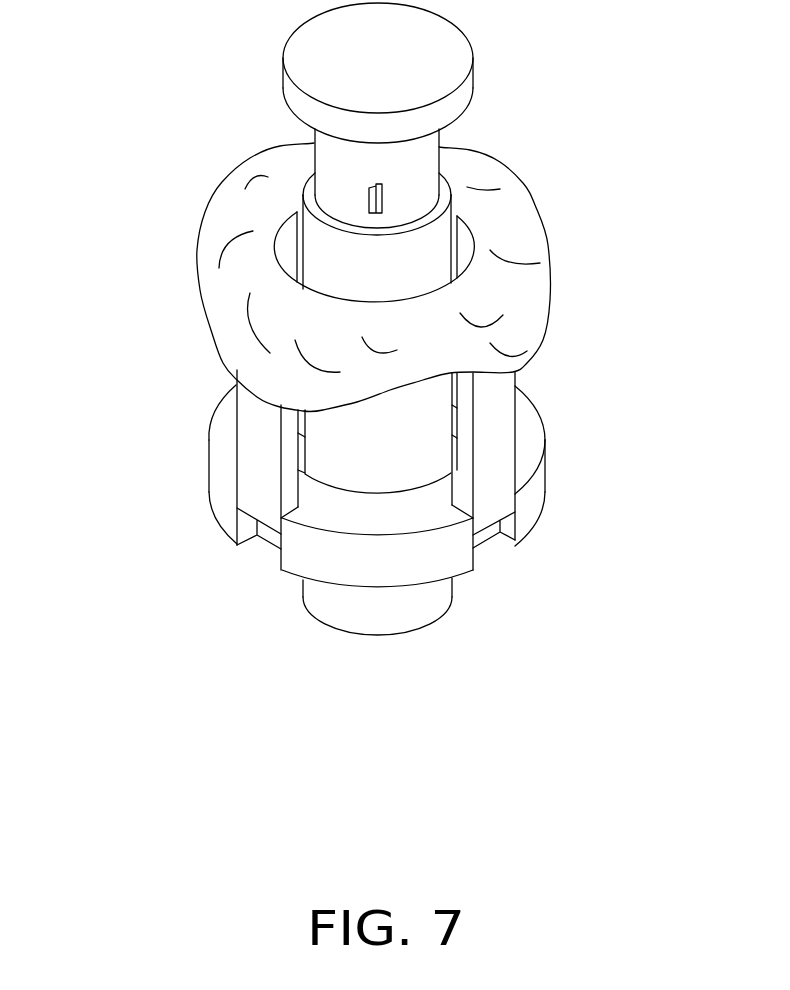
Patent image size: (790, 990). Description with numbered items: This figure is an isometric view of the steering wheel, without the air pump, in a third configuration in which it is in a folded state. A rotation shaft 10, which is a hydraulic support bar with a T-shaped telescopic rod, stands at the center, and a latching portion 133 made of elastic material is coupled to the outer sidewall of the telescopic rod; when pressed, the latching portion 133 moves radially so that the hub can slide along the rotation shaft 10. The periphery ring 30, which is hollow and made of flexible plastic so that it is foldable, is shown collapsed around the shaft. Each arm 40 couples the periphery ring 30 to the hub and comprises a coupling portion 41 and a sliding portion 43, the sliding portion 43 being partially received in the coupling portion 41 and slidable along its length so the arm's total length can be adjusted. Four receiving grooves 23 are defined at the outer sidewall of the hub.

The rotation shaft 10 is at (397, 115).
The latching portion 133 is at (370, 200).
The periphery ring 30 is at (522, 233).
The arm 40 is at (349, 371).
The sliding portion 43 is at (290, 212).
The coupling portion 41 is at (282, 257).
The receiving groove 23 is at (505, 533).